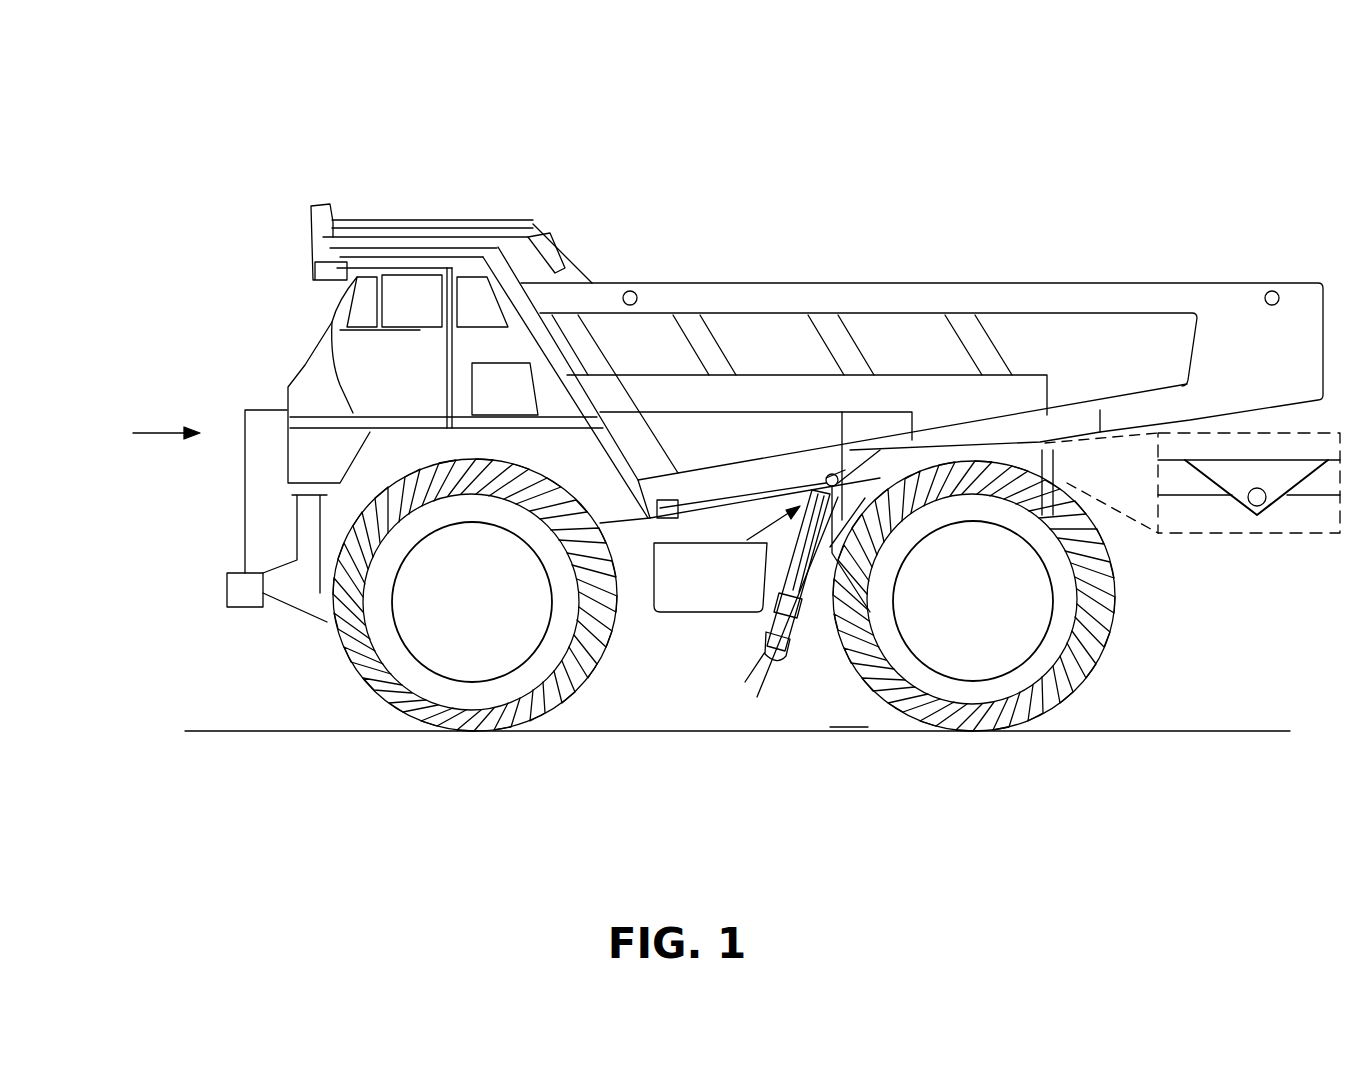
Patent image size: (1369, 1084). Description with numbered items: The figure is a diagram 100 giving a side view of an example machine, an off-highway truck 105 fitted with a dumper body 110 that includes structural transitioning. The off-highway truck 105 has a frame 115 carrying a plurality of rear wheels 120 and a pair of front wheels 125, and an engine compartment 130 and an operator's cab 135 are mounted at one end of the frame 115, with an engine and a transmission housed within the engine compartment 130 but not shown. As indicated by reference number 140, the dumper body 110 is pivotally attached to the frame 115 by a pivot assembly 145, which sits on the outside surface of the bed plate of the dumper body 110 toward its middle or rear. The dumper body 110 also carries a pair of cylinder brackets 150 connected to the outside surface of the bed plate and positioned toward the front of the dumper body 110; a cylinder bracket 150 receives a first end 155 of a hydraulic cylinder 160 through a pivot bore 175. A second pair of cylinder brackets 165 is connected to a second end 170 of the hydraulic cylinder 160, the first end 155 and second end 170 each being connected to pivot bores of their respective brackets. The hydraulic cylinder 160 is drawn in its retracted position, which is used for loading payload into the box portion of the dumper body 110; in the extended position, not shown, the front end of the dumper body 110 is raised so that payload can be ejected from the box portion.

The diagram 100 is at (162, 58).
The off-highway truck 105 is at (222, 272).
The dumper body 110 is at (1012, 190).
The frame 115 is at (627, 570).
The rear wheels 120 is at (1128, 580).
The front wheels 125 is at (393, 652).
The engine compartment 130 is at (136, 434).
The operator's cab 135 is at (378, 380).
The pivotal attachment of dumper body to frame 140 is at (1276, 533).
The pivot assembly 145 is at (1235, 484).
The cylinder brackets 150 is at (826, 476).
The first end 155 is at (727, 559).
The hydraulic cylinder 160 is at (757, 697).
The second pair of cylinder brackets 165 is at (762, 612).
The second end 170 is at (752, 667).
The pivot bore 175 is at (845, 413).